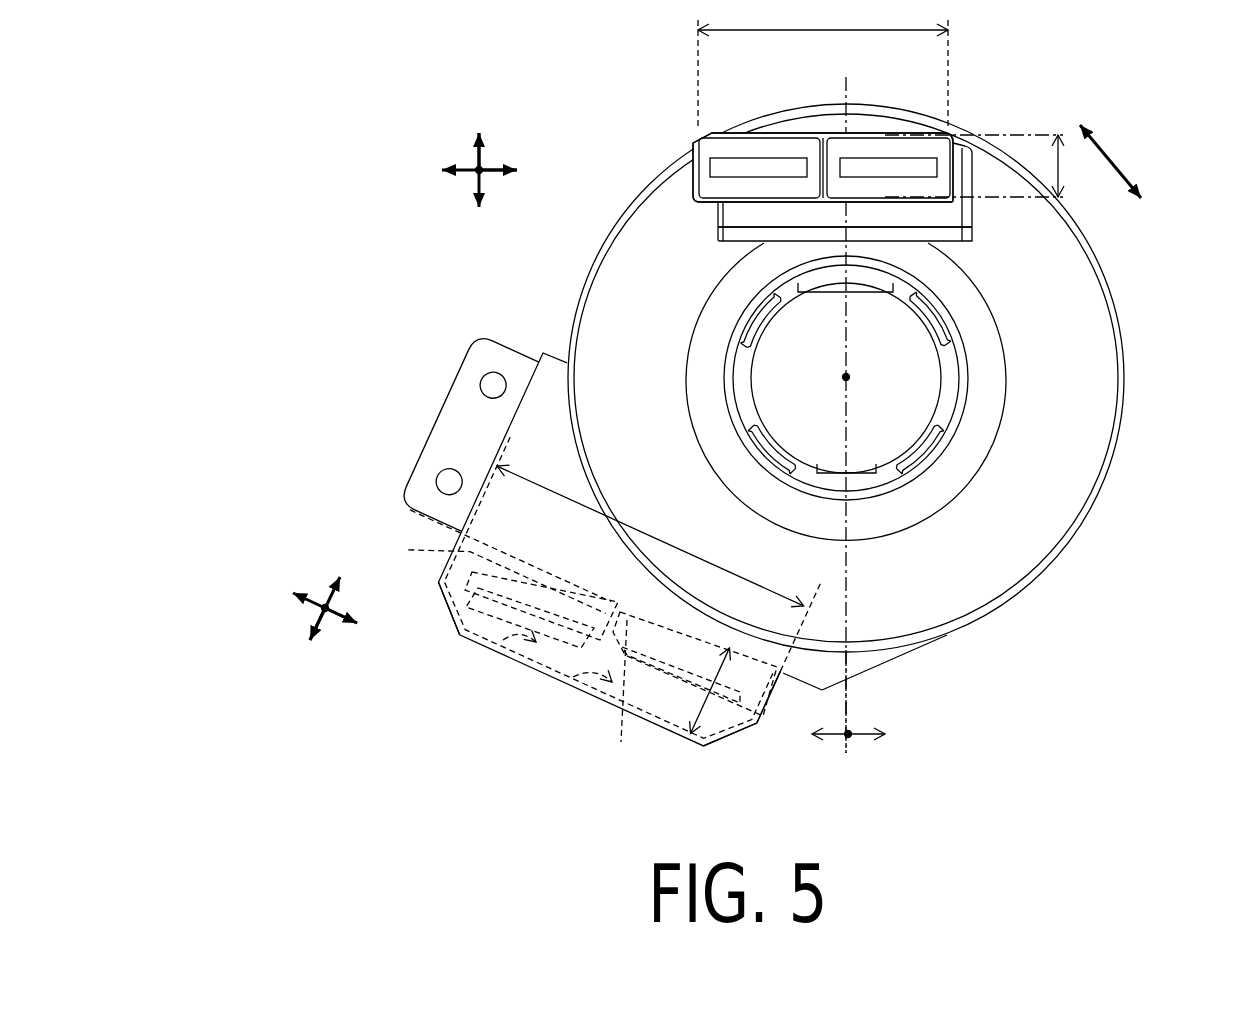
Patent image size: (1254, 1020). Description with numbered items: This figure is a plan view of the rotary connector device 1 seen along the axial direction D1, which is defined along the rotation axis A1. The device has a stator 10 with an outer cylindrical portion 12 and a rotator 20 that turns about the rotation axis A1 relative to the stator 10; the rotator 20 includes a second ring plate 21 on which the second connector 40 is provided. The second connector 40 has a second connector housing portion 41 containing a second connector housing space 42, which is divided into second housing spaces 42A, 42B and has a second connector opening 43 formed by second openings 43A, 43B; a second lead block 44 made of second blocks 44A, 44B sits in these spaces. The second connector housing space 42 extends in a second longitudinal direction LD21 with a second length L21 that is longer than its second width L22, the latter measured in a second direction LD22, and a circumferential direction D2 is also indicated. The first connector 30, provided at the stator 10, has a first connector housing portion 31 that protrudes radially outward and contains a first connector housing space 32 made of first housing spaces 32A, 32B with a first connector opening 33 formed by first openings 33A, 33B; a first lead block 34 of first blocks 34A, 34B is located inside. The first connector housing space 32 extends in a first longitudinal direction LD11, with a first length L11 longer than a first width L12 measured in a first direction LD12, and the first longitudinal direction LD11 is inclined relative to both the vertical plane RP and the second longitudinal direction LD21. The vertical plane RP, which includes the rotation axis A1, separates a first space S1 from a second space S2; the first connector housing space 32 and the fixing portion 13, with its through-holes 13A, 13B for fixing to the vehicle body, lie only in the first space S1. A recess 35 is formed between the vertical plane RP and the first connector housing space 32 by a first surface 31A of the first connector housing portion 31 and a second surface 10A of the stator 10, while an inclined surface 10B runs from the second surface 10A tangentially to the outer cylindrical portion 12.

The rotary connector device 1 is at (1024, 96).
The stator 10 is at (1120, 290).
The second surface 10A is at (805, 680).
The inclined surface 10B is at (905, 653).
The outer cylindrical portion 12 is at (1118, 331).
The fixing portion 13 is at (455, 410).
The through-hole 13A is at (493, 385).
The through-hole 13B is at (450, 482).
The rotator 20 is at (1117, 425).
The second ring plate 21 is at (1075, 457).
The first connector 30 is at (452, 630).
The first connector housing portion 31 is at (462, 636).
The first surface 31A is at (778, 720).
The first connector housing space 32 is at (537, 716).
The first housing space 32A is at (578, 678).
The first housing space 32B is at (493, 650).
The first connector opening 33 is at (363, 505).
The first opening 33A is at (479, 586).
The first opening 33B is at (483, 560).
The first lead block 34 is at (677, 776).
The first block 34A is at (660, 675).
The first block 34B is at (618, 607).
The recess 35 is at (785, 695).
The second connector 40 is at (688, 134).
The second connector housing portion 41 is at (693, 152).
The second connector housing space 42 is at (815, 66).
The second housing space 42A is at (775, 149).
The second housing space 42B is at (836, 150).
The second connector opening 43 is at (555, 182).
The second opening 43A is at (810, 172).
The second opening 43B is at (832, 185).
The second lead block 44 is at (937, 66).
The second block 44A is at (853, 170).
The second block 44B is at (900, 166).
The rotation axis A1 is at (847, 378).
The first length L11 is at (530, 478).
The first width L12 is at (700, 728).
The second length L21 is at (823, 66).
The second width L22 is at (1060, 166).
The first longitudinal direction LD11 is at (340, 605).
The first direction LD12 is at (320, 625).
The second longitudinal direction LD21 is at (495, 167).
The second direction LD22 is at (475, 150).
The axial direction D1 is at (475, 175).
The circumferential direction D2 is at (1125, 163).
The vertical plane RP is at (850, 693).
The first space S1 is at (838, 748).
The second space S2 is at (880, 740).